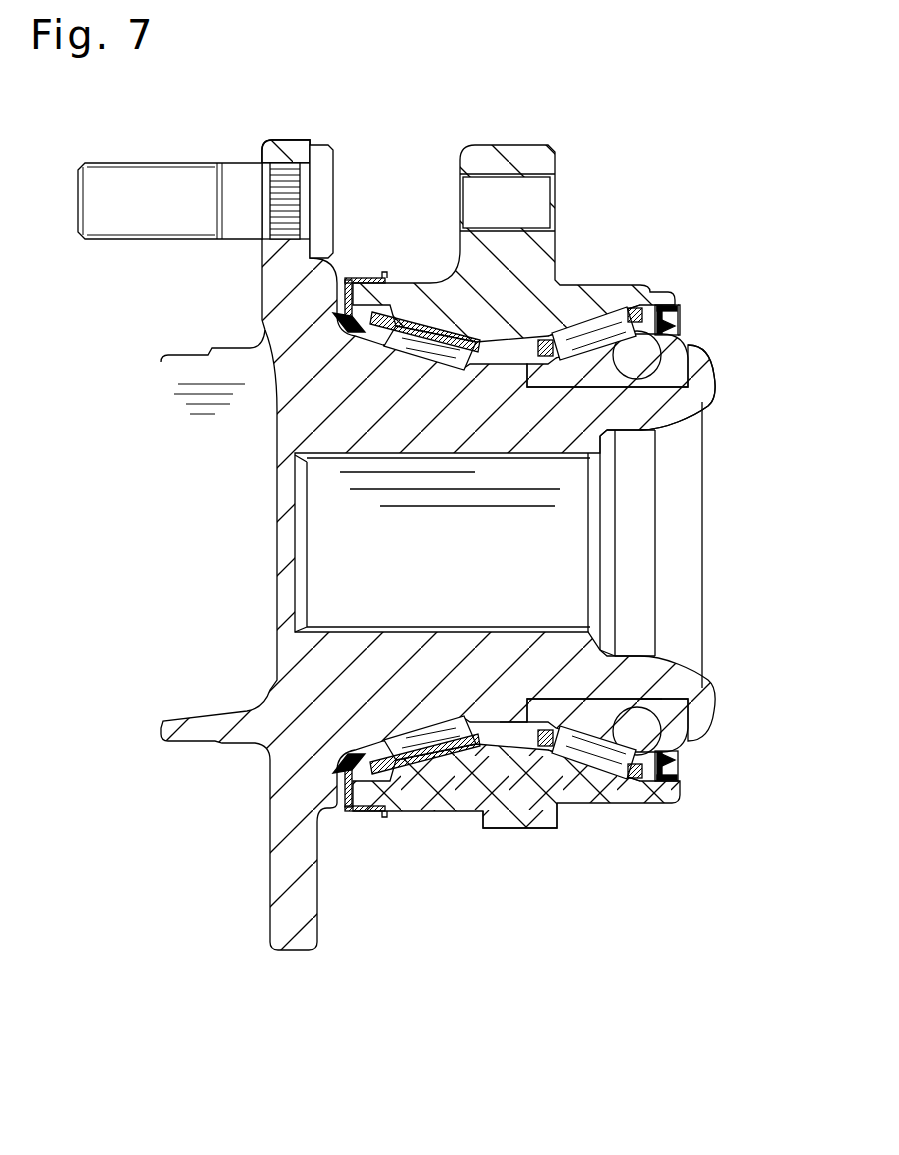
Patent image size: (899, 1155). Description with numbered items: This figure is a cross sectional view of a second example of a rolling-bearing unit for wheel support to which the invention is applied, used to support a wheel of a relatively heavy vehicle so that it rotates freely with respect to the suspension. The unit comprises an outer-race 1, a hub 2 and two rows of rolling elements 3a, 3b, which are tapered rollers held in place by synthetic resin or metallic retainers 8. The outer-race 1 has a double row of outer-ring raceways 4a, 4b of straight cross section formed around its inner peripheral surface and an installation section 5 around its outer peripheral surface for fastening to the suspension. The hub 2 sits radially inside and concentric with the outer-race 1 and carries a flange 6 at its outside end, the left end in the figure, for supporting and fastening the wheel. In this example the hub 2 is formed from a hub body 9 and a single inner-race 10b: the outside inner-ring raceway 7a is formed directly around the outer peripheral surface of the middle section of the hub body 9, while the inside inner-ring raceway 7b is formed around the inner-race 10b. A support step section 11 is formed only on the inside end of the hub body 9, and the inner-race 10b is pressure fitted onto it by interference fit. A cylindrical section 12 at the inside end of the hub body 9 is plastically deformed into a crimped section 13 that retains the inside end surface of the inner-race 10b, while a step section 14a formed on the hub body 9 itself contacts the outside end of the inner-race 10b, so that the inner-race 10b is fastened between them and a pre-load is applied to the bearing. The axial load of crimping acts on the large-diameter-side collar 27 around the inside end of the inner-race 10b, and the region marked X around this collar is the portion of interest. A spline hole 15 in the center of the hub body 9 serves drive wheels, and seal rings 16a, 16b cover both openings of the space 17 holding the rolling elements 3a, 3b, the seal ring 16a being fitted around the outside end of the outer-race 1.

The outer-race 1 is at (594, 290).
The hub 2 is at (287, 415).
The rolling elements 3a is at (434, 340).
The rolling elements 3b is at (609, 312).
The outer-ring raceway 4a is at (408, 330).
The outer-ring raceway 4b is at (582, 285).
The installation section 5 is at (472, 165).
The flange 6 is at (278, 280).
The inner-ring raceway 7a is at (430, 745).
The inner-ring raceway 7b is at (595, 735).
The retainers 8 is at (387, 343).
The hub body 9 is at (297, 672).
The inner-race 10b is at (684, 735).
The support step section 11 is at (642, 699).
The cylindrical section 12 is at (660, 430).
The crimped section 13 is at (690, 350).
The step section 14a is at (512, 745).
The spline hole 15 is at (552, 628).
The seal ring 16a is at (352, 810).
The seal ring 16b is at (667, 325).
The space 17 is at (485, 786).
The large-diameter-side collar 27 is at (680, 332).
The enlarged portion indicator X is at (676, 356).